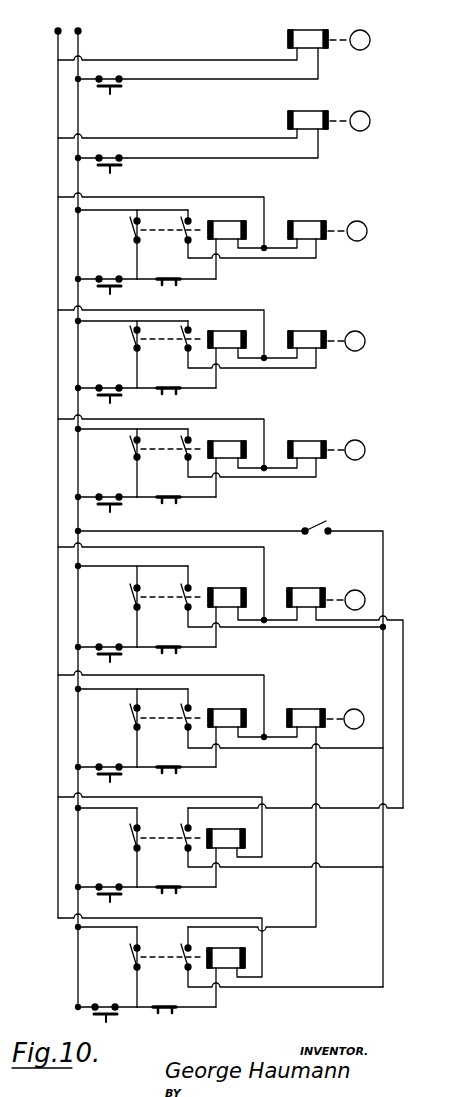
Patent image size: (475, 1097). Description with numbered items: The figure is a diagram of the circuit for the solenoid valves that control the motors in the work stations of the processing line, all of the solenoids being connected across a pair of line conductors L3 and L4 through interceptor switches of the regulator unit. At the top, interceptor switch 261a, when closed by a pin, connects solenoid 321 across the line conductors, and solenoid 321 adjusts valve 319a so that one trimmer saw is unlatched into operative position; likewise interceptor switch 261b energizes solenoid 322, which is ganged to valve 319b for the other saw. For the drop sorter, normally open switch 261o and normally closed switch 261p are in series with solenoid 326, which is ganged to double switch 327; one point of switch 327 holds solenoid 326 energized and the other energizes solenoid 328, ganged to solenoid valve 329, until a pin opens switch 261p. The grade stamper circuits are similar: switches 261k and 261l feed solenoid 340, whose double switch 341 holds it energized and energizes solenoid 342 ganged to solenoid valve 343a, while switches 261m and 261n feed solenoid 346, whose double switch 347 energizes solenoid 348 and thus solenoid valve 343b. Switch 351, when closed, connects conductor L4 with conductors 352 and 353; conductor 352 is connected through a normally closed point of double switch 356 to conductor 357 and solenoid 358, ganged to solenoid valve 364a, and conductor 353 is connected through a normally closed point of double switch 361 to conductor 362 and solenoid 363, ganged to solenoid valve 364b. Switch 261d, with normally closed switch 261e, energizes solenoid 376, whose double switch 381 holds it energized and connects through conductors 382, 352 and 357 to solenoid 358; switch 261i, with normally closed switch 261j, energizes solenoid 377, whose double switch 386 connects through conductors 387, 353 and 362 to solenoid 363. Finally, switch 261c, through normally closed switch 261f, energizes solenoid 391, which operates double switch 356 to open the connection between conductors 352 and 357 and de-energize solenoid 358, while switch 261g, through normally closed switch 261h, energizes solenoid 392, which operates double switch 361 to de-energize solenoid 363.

The line conductor L3 is at (58, 49).
The line conductor L4 is at (78, 44).
The solenoid 321 is at (288, 43).
The solenoid valve 319a is at (369, 44).
The solenoid 322 is at (288, 123).
The solenoid valve 319b is at (369, 125).
The interceptor switch 261a is at (114, 92).
The interceptor switch 261b is at (114, 171).
The interceptor switch 261c is at (114, 900).
The interceptor switch 261d is at (114, 660).
The interceptor switch 261e is at (166, 643).
The interceptor switch 261f is at (166, 883).
The interceptor switch 261g is at (110, 1020).
The interceptor switch 261h is at (163, 1003).
The interceptor switch 261i is at (114, 780).
The interceptor switch 261j is at (166, 763).
The interceptor switch 261k is at (114, 401).
The interceptor switch 261l is at (166, 385).
The interceptor switch 261m is at (114, 510).
The interceptor switch 261n is at (166, 493).
The interceptor switch 261o is at (114, 292).
The interceptor switch 261p is at (166, 277).
The solenoid 326 is at (244, 221).
The double switch 327 is at (132, 231).
The solenoid 328 is at (300, 220).
The solenoid valve 329 is at (365, 237).
The solenoid 340 is at (218, 331).
The double switch 341 is at (131, 341).
The solenoid 342 is at (304, 323).
The solenoid valve 343a is at (363, 348).
The solenoid 346 is at (218, 441).
The double switch 347 is at (131, 452).
The solenoid 348 is at (299, 441).
The solenoid valve 343b is at (363, 457).
The switch 351 is at (313, 527).
The solenoid 376 is at (217, 588).
The double switch 381 is at (131, 601).
The solenoid 358 is at (289, 589).
The solenoid valve 364a is at (365, 600).
The conductor 382 is at (244, 631).
The conductor 357 is at (403, 690).
The solenoid 377 is at (217, 709).
The double switch 386 is at (131, 722).
The solenoid 363 is at (289, 710).
The solenoid valve 364b is at (372, 733).
The conductor 387 is at (287, 750).
The solenoid 391 is at (217, 829).
The double switch 356 is at (131, 842).
The conductor 352 is at (290, 869).
The solenoid 392 is at (217, 948).
The double switch 361 is at (131, 961).
The conductor 362 is at (292, 930).
The conductor 353 is at (299, 989).